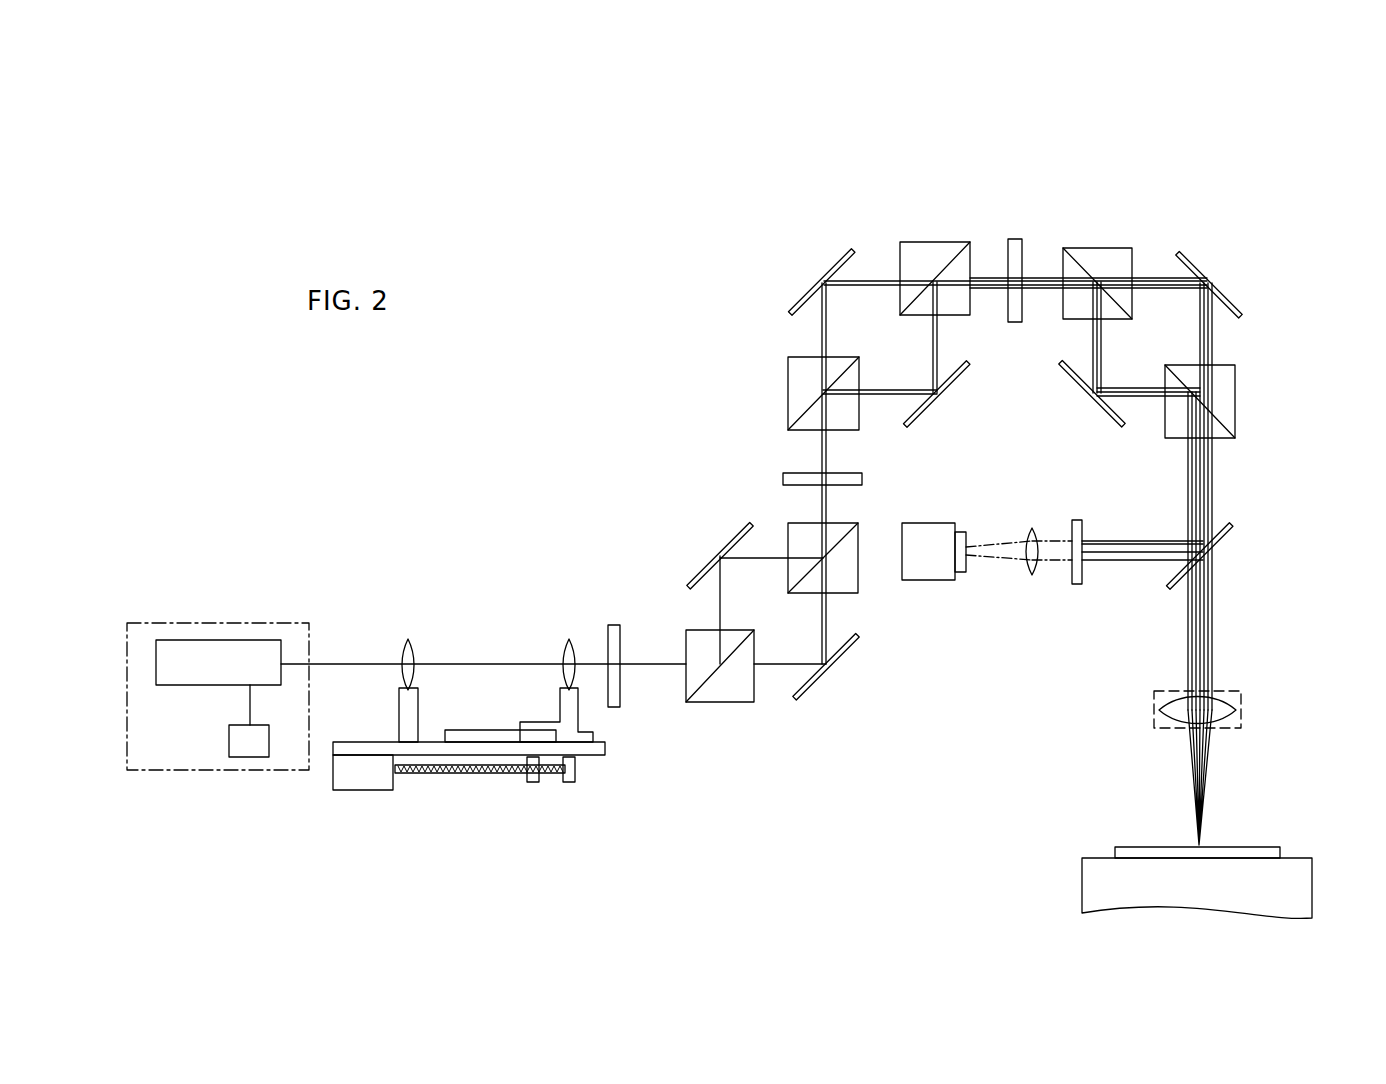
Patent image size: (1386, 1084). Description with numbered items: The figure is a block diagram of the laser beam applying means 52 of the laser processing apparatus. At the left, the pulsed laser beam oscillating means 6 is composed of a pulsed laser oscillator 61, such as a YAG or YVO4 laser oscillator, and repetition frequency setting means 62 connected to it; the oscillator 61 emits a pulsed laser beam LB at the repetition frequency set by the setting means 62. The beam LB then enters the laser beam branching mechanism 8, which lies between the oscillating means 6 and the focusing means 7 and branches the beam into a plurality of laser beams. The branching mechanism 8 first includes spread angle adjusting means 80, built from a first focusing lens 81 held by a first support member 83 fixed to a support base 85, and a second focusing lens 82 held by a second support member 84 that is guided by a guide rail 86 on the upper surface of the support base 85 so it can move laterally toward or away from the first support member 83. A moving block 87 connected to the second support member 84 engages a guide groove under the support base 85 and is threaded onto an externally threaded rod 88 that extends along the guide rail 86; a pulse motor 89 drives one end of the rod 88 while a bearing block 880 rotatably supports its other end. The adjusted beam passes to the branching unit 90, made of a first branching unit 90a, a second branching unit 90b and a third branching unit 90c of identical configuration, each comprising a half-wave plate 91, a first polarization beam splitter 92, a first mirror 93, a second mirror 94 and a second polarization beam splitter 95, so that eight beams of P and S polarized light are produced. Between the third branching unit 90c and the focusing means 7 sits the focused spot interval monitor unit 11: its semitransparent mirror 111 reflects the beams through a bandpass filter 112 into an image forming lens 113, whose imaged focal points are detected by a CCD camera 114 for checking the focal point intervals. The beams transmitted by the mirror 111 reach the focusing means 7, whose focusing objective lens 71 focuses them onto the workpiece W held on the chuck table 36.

The pulsed laser beam oscillating means 6 is at (232, 623).
The pulsed laser oscillator 61 is at (185, 655).
The repetition frequency setting means 62 is at (245, 757).
The pulsed laser beam LB is at (356, 663).
The spread angle adjusting means 80 is at (487, 635).
The first focusing lens 81 is at (408, 645).
The second focusing lens 82 is at (569, 645).
The first support member 83 is at (400, 720).
The second support member 84 is at (578, 725).
The support base 85 is at (340, 742).
The guide rail 86 is at (470, 730).
The moving block 87 is at (532, 782).
The externally threaded rod 88 is at (456, 773).
The pulse motor 89 is at (370, 790).
The bearing block 880 is at (578, 775).
The laser beam applying means 52 is at (778, 163).
The branching unit 90 is at (862, 214).
The first branching unit 90a is at (710, 523).
The second branching unit 90b is at (778, 283).
The third branching unit 90c is at (1215, 230).
The half-wave plate 91 is at (614, 625).
The first polarization beam splitter 92 is at (735, 702).
The first mirror 93 is at (851, 643).
The second mirror 94 is at (698, 577).
The second polarization beam splitter 95 is at (850, 593).
The laser beam branching mechanism 8 is at (777, 805).
The focusing means 7 is at (1228, 690).
The focusing objective lens 71 is at (1227, 703).
The focused spot interval monitor unit 11 is at (995, 613).
The semitransparent mirror 111 is at (1226, 531).
The bandpass filter 112 is at (1078, 520).
The image forming lens 113 is at (1031, 530).
The CCD camera 114 is at (940, 523).
The workpiece W is at (1258, 847).
The chuck table 36 is at (1310, 898).